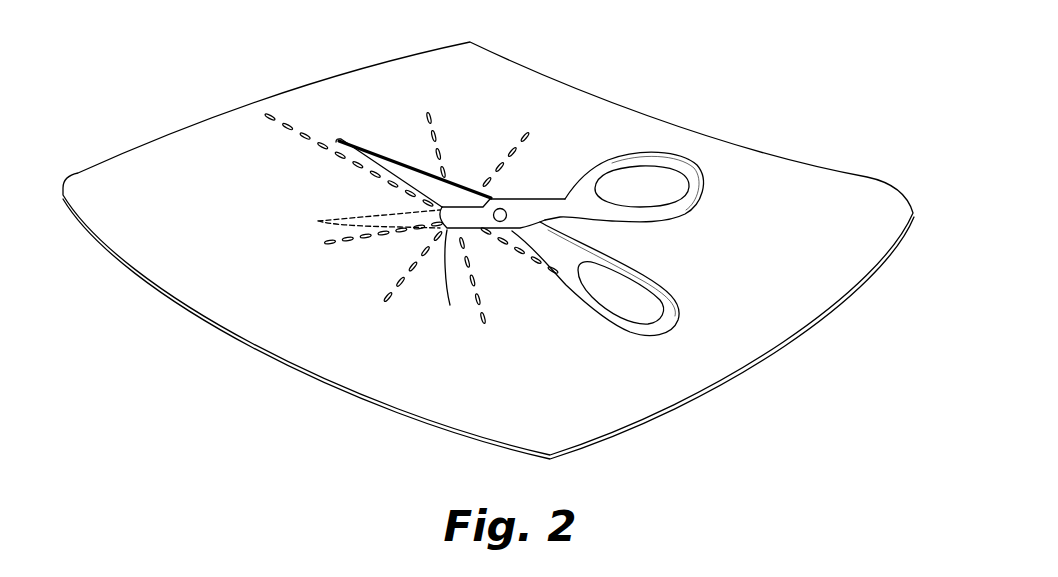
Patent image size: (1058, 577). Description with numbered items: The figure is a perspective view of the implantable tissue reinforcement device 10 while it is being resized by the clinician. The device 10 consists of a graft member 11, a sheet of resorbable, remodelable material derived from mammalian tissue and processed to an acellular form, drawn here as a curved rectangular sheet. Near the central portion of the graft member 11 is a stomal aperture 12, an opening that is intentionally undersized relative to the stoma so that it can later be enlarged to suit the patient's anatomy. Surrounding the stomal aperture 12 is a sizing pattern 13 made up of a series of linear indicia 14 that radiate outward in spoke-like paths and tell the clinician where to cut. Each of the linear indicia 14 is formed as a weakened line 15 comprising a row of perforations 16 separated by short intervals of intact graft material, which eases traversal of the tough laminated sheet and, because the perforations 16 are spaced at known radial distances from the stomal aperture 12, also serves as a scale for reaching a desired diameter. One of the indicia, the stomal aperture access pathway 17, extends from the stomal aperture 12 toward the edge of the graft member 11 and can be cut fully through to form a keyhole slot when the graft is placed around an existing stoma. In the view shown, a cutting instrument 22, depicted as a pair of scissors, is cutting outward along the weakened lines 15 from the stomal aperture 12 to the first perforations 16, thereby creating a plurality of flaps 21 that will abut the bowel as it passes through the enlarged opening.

The implantable tissue reinforcement device 10 is at (690, 102).
The graft member 11 is at (610, 400).
The stomal aperture 12 is at (450, 305).
The sizing pattern 13 is at (407, 296).
The linear indicia 14 is at (440, 208).
The weakened lines 15 is at (471, 314).
The perforations 16 is at (408, 202).
The stomal aperture access pathway 17 is at (280, 137).
The flaps 21 is at (392, 253).
The cutting instrument 22 is at (462, 221).